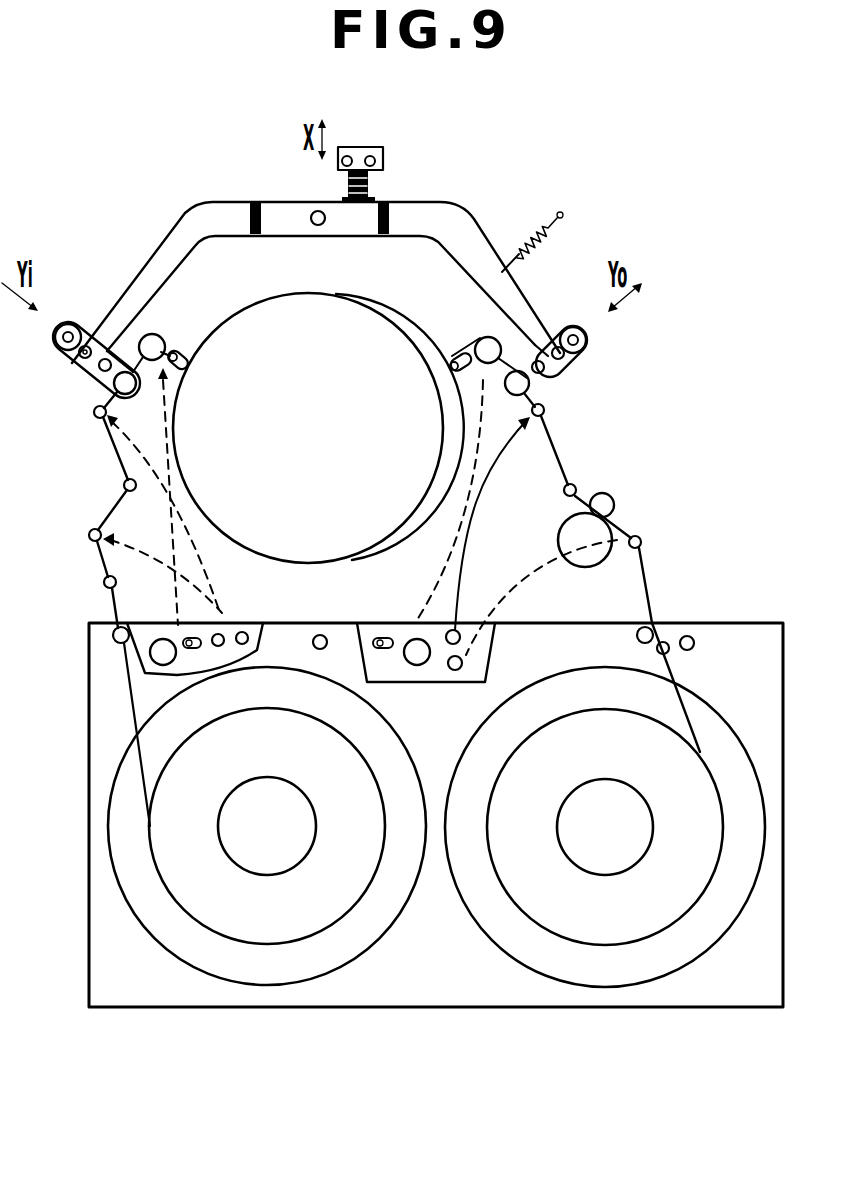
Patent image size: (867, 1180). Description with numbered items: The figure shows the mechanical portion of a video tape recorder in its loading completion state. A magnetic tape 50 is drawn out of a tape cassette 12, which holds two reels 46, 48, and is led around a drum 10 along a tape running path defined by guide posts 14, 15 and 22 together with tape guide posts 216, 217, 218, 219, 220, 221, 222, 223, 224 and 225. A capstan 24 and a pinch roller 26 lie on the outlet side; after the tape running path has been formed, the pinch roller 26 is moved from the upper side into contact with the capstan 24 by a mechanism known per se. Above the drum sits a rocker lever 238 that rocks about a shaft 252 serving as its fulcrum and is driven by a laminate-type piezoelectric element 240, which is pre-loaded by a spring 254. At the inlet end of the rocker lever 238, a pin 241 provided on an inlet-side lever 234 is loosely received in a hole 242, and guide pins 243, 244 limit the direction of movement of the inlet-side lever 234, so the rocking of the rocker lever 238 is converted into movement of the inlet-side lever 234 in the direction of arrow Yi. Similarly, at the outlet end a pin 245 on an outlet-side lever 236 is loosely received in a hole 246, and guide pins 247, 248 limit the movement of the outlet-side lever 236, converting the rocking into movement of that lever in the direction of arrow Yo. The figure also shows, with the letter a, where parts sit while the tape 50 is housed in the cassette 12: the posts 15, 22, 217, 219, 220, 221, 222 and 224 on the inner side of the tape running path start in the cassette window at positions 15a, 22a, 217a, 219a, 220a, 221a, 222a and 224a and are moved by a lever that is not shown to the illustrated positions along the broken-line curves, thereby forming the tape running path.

The drum 10 is at (264, 306).
The tape cassette 12 is at (96, 975).
The guide post 14 is at (104, 582).
The guide post 15 is at (91, 530).
The guide post position in tape housing state 15a is at (250, 628).
The guide post 22 is at (642, 541).
The guide post position in tape housing state 22a is at (462, 657).
The capstan 24 is at (615, 505).
The pinch roller 26 is at (591, 557).
The reel 46 is at (248, 970).
The reel 48 is at (612, 975).
The magnetic tape 50 is at (650, 587).
The tape guide post 216 is at (124, 485).
The tape guide post 217 is at (98, 418).
The tape guide post position in tape housing state 217a is at (232, 628).
The tape guide post 218 is at (114, 390).
The tape guide post 219 is at (155, 334).
The tape guide post position in tape housing state 219a is at (159, 639).
The tape guide post 220 is at (178, 352).
The tape guide post position in tape housing state 220a is at (193, 633).
The tape guide post 221 is at (453, 358).
The tape guide post position in tape housing state 221a is at (380, 641).
The tape guide post 222 is at (485, 337).
The tape guide post position in tape housing state 222a is at (413, 642).
The tape guide post 223 is at (530, 391).
The tape guide post 224 is at (546, 412).
The tape guide post position in tape housing state 224a is at (457, 632).
The tape guide post 225 is at (574, 485).
The inlet-side lever 234 is at (58, 349).
The outlet-side lever 236 is at (590, 348).
The rocker lever 238 is at (466, 238).
The laminate-type piezoelectric element 240 is at (373, 191).
The pin 241 is at (73, 362).
The hole 242 is at (85, 345).
The guide pin 243 is at (65, 323).
The guide pin 244 is at (112, 347).
The pin 245 is at (565, 370).
The hole 246 is at (558, 332).
The guide pin 247 is at (578, 325).
The guide pin 248 is at (477, 373).
The shaft 252 is at (313, 212).
The spring 254 is at (552, 238).